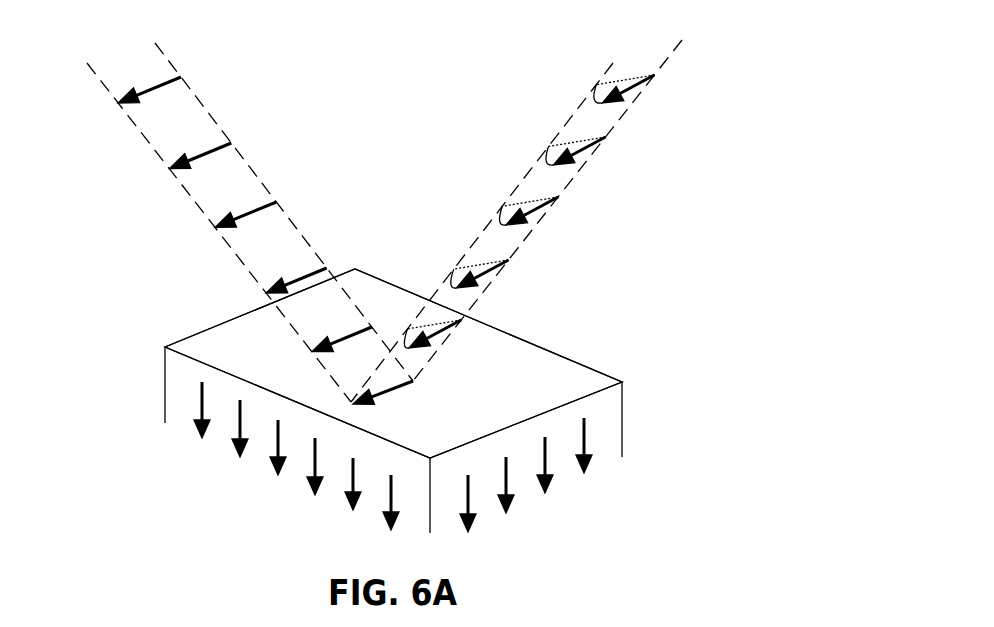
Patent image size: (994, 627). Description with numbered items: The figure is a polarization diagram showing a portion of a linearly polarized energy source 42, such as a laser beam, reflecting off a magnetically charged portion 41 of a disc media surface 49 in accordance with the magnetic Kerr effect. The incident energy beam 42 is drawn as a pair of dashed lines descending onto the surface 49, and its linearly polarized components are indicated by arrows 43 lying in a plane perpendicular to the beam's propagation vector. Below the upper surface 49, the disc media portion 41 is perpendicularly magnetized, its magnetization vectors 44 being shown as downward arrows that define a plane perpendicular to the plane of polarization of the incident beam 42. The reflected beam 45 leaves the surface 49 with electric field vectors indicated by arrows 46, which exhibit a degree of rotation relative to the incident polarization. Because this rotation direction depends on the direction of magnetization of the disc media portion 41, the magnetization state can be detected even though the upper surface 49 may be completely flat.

The magnetically charged portion of disc media 41 is at (163, 382).
The linearly polarized energy source 42 is at (195, 203).
The polarized component arrows 43 is at (120, 103).
The magnetization vectors 44 is at (272, 460).
The reflected beam 45 is at (522, 245).
The electric field vector arrows 46 is at (633, 102).
The disc media surface 49 is at (563, 380).